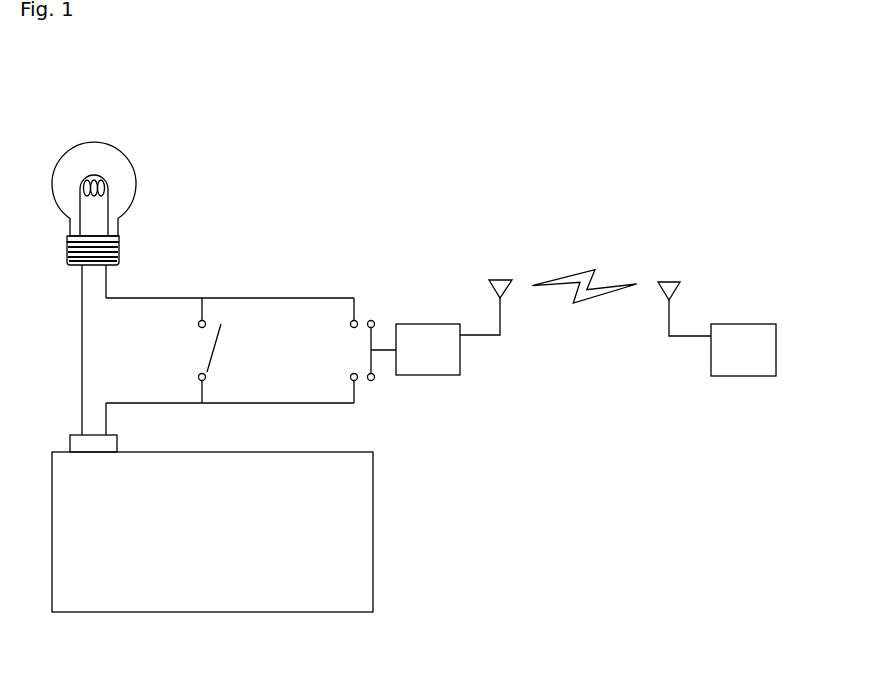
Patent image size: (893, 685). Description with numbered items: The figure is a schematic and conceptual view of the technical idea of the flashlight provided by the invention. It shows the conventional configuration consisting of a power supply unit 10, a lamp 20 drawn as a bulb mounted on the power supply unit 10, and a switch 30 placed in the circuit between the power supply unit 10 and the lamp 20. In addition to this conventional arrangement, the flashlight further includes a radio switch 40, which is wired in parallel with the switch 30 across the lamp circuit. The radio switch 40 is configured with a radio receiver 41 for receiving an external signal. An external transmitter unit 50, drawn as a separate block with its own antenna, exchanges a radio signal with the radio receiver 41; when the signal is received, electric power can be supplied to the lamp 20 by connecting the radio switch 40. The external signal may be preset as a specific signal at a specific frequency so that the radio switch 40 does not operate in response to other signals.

The power supply unit 10 is at (373, 552).
The lamp 20 is at (121, 147).
The switch 30 is at (208, 350).
The radio switch 40 is at (432, 376).
The radio receiver 41 is at (495, 279).
The external transmitter unit 50 is at (738, 376).